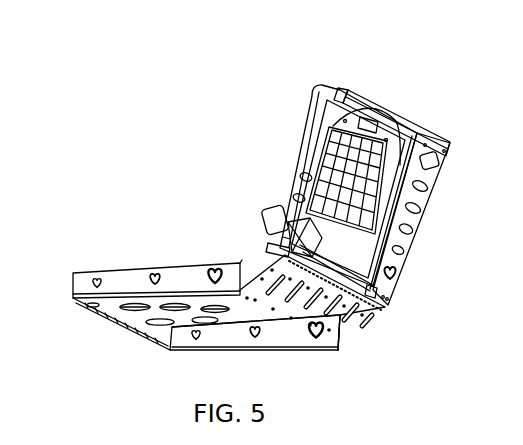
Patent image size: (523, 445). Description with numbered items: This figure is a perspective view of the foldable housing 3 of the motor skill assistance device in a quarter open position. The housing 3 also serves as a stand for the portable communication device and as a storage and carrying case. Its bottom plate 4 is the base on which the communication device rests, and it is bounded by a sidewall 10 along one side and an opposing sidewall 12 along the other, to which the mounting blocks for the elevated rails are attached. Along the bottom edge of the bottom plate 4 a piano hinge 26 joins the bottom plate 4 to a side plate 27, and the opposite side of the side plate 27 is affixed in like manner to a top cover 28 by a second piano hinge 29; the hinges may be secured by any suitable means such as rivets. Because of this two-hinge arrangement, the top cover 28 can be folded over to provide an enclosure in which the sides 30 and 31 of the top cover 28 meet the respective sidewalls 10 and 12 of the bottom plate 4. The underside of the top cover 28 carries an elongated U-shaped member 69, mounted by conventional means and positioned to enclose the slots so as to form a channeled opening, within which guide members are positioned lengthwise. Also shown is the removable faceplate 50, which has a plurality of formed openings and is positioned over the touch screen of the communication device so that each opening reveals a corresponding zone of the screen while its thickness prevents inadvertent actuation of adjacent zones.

The foldable housing 3 is at (377, 104).
The bottom plate 4 is at (412, 125).
The sidewall 10 is at (307, 150).
The sidewall 12 is at (423, 220).
The piano hinge 26 is at (313, 252).
The side plate 27 is at (370, 328).
The top cover 28 is at (254, 352).
The second piano hinge 29 is at (338, 350).
The side of the top cover 30 is at (153, 267).
The side of the top cover 31 is at (158, 356).
The removable faceplate 50 is at (348, 125).
The elongated U-shaped member 69 is at (143, 320).